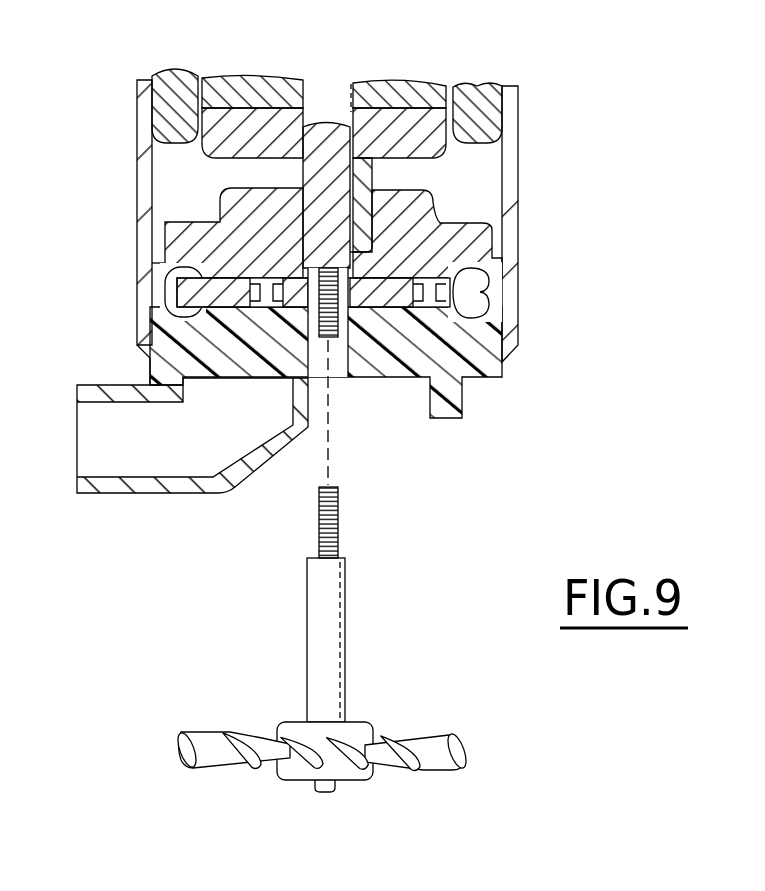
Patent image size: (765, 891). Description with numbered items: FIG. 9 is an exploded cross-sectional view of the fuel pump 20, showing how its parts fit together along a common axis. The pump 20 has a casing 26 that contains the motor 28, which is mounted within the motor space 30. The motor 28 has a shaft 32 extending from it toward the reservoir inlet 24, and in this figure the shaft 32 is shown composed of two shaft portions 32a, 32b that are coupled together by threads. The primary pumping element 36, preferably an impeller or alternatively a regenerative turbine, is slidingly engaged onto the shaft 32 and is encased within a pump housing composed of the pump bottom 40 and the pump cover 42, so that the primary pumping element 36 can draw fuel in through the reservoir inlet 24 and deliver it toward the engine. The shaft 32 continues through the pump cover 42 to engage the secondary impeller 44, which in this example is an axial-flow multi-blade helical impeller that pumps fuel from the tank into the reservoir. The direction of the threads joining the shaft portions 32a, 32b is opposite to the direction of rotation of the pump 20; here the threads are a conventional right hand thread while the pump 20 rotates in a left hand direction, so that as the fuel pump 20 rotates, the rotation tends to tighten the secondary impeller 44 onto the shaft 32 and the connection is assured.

The fuel pump 20 is at (603, 345).
The reservoir inlet 24 is at (93, 413).
The casing 26 is at (140, 190).
The motor 28 is at (383, 98).
The motor space 30 is at (468, 155).
The shaft 32 is at (463, 457).
The shaft portion 32a is at (347, 338).
The shaft portion 32b is at (333, 595).
The primary pumping element 36 is at (192, 277).
The pump bottom 40 is at (470, 245).
The pump cover 42 is at (470, 353).
The secondary impeller 44 is at (373, 758).